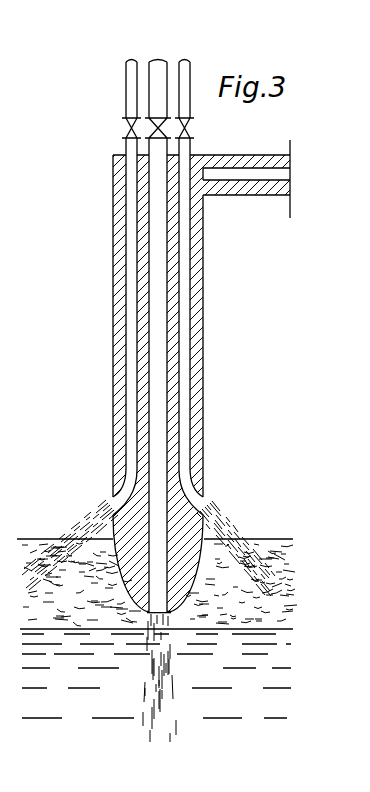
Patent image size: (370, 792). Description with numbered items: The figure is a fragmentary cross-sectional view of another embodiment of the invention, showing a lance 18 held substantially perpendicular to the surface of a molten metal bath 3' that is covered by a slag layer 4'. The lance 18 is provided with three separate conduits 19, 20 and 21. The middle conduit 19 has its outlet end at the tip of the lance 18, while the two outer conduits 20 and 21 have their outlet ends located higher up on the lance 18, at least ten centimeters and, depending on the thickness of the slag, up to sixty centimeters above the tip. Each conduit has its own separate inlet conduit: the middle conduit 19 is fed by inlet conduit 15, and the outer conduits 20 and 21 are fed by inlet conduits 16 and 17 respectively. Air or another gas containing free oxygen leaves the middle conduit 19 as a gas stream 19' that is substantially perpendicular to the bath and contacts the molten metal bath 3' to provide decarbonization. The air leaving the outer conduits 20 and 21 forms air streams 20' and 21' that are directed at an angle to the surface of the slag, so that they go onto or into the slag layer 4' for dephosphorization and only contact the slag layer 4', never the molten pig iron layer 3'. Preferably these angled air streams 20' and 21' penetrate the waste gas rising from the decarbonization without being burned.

The inlet conduit 15 is at (157, 70).
The inlet conduit 16 is at (128, 88).
The inlet conduit 17 is at (186, 75).
The lance 18 is at (197, 302).
The conduit 19 is at (118, 383).
The conduit 20 is at (109, 335).
The conduit 21 is at (209, 335).
The air stream 20' is at (70, 545).
The air stream 21' is at (236, 548).
The gas stream 19' is at (187, 678).
The slag layer 4' is at (169, 584).
The molten metal bath 3' is at (169, 676).